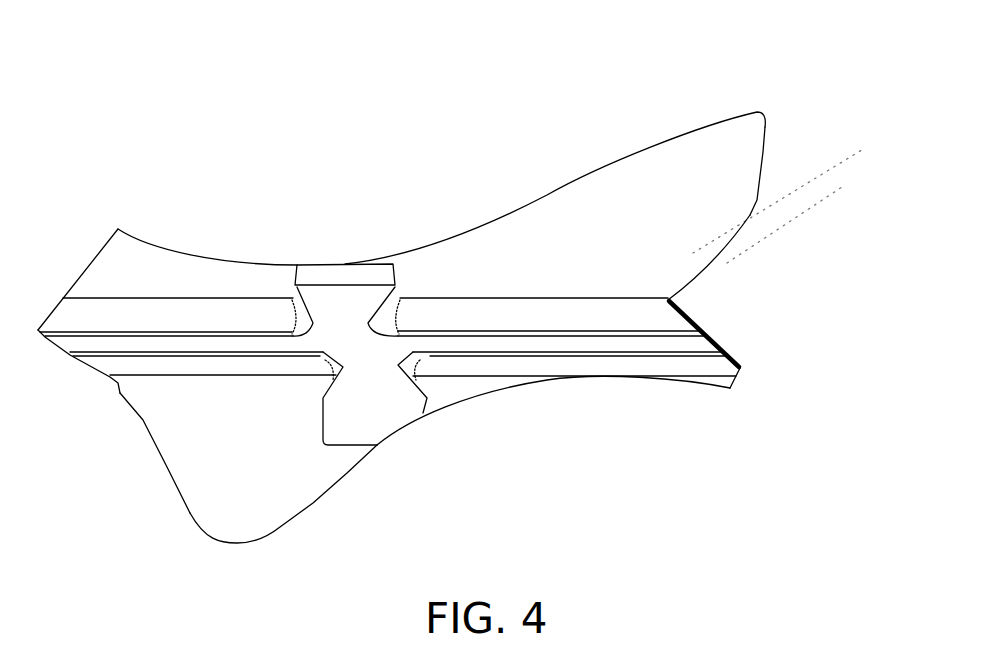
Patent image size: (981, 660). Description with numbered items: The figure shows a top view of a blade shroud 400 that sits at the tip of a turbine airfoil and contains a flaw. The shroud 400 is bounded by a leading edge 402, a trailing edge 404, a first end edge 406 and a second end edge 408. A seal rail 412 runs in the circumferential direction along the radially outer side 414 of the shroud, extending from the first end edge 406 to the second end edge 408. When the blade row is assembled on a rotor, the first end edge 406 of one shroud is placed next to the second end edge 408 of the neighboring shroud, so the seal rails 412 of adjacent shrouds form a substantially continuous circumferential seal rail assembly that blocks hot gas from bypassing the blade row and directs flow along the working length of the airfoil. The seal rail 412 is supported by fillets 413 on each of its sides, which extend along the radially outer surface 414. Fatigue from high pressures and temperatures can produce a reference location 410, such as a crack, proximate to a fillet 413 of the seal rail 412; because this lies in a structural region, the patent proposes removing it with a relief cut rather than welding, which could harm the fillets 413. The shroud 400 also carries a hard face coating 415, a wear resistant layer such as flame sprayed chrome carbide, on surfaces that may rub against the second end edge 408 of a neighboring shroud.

The blade shroud 400 is at (118, 128).
The leading edge 402 is at (283, 527).
The trailing edge 404 is at (763, 150).
The first end edge 406 is at (725, 253).
The second end edge 408 is at (50, 307).
The reference location 410 is at (661, 310).
The seal rail 412 is at (465, 345).
The fillets 413 is at (567, 325).
The radially outer side 414 is at (203, 280).
The hard face coating 415 is at (738, 362).